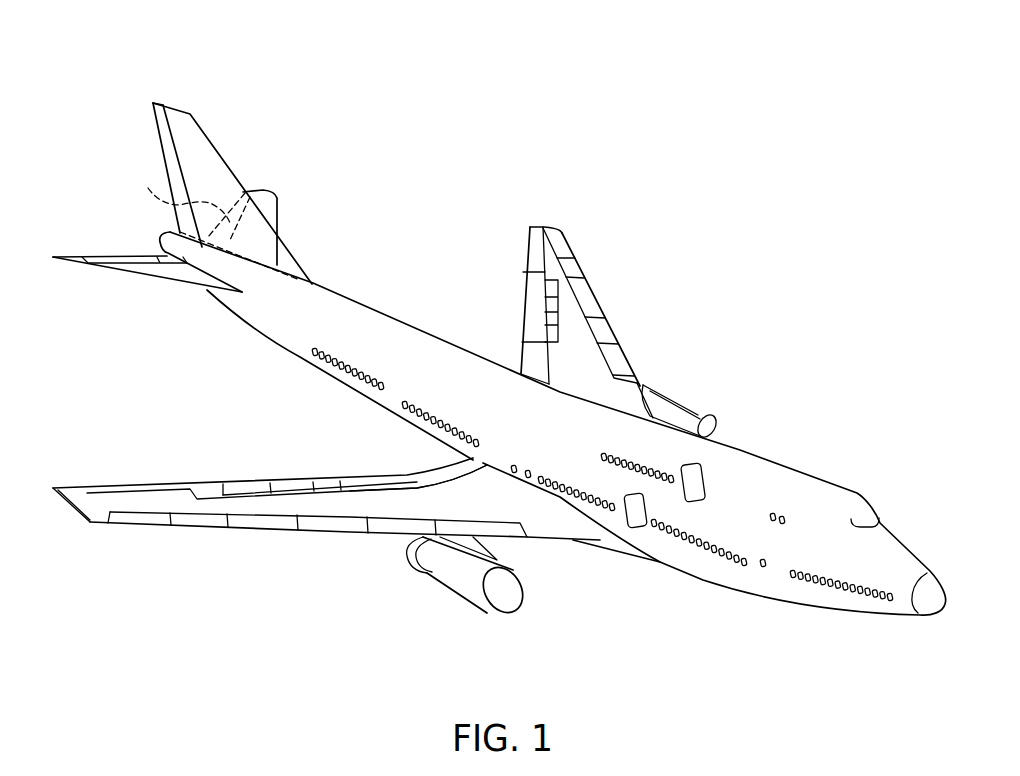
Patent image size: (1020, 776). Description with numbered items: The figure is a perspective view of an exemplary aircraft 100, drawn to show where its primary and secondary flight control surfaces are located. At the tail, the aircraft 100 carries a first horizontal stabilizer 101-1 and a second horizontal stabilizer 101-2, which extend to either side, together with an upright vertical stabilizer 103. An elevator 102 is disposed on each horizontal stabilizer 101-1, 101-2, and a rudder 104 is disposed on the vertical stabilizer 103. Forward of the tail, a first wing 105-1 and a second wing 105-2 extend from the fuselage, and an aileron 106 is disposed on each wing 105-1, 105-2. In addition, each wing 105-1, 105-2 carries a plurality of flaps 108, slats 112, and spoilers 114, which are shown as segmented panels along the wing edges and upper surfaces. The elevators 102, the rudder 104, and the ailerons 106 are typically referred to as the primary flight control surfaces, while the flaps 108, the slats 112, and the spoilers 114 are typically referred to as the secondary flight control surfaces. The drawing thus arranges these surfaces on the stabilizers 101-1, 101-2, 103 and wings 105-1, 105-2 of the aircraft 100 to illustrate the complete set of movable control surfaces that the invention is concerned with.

The aircraft 100 is at (690, 110).
The first horizontal stabilizer 101-1 is at (132, 279).
The second horizontal stabilizer 101-2 is at (278, 208).
The elevator 102 is at (102, 257).
The vertical stabilizer 103 is at (219, 158).
The rudder 104 is at (157, 120).
The first wing 105-1 is at (547, 518).
The second wing 105-2 is at (633, 400).
The aileron 106 is at (115, 490).
The flaps 108 is at (372, 478).
The slats 112 is at (383, 527).
The spoilers 114 is at (248, 498).